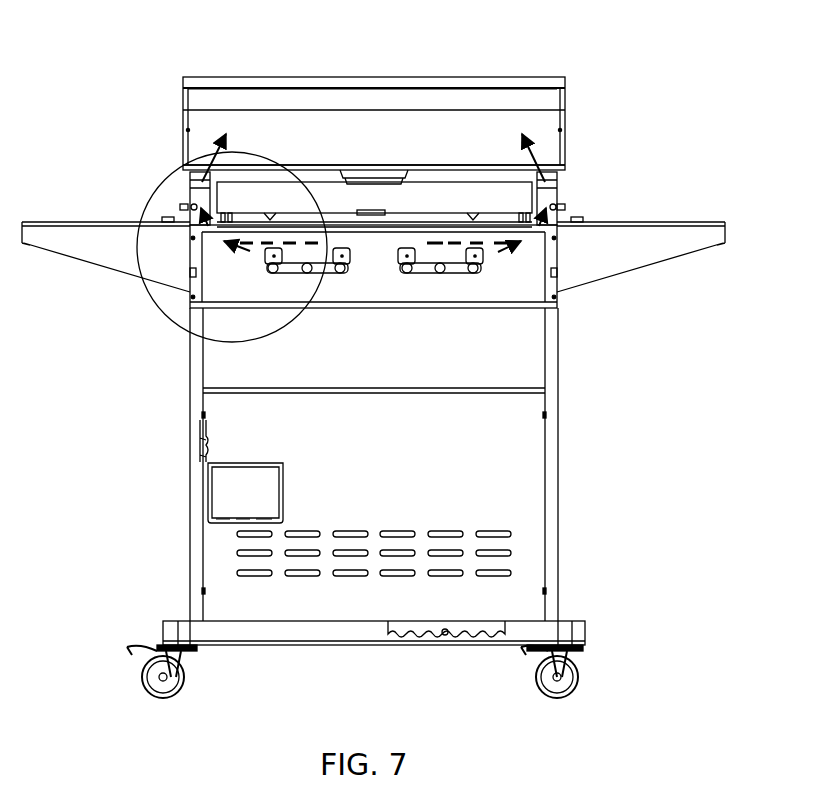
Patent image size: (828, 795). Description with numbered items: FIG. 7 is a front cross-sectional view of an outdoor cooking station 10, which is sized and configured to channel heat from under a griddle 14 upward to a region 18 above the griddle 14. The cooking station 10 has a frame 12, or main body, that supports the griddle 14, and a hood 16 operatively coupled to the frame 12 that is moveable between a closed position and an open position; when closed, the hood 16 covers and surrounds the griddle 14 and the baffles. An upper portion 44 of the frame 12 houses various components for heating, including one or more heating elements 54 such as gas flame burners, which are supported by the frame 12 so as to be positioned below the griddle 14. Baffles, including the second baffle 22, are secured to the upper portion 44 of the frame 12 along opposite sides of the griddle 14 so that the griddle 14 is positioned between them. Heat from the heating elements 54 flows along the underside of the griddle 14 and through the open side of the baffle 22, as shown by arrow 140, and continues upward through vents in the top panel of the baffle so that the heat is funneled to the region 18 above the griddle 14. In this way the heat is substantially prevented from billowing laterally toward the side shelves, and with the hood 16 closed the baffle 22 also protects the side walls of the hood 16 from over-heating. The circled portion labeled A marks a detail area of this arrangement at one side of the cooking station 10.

The outdoor cooking station 10 is at (644, 86).
The frame 12 is at (562, 354).
The griddle 14 is at (453, 208).
The hood 16 is at (504, 76).
The region above the griddle 18 is at (388, 145).
The second baffle 22 is at (180, 208).
The upper portion of the frame 44 is at (572, 258).
The heating elements 54 is at (340, 279).
The arrow 140 is at (196, 150).
The detail region A is at (157, 306).